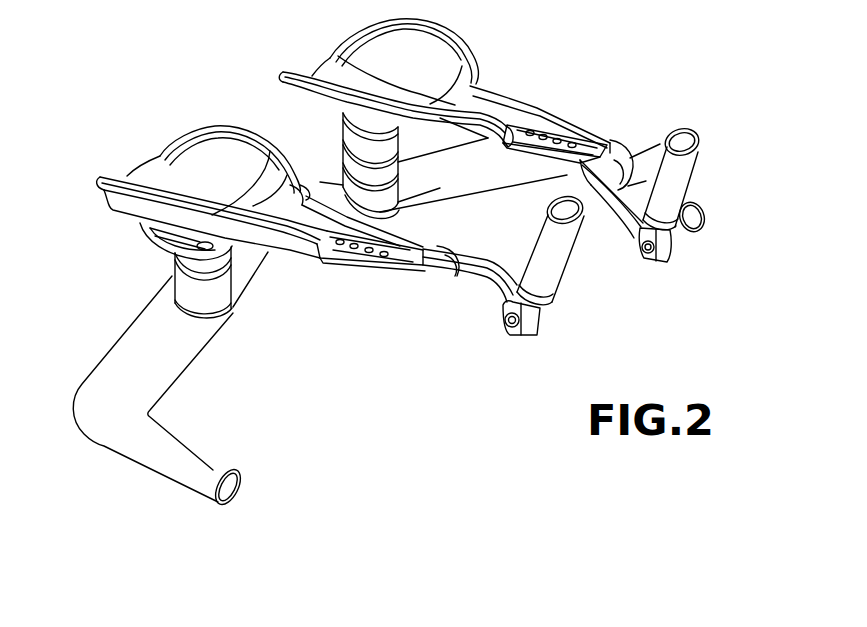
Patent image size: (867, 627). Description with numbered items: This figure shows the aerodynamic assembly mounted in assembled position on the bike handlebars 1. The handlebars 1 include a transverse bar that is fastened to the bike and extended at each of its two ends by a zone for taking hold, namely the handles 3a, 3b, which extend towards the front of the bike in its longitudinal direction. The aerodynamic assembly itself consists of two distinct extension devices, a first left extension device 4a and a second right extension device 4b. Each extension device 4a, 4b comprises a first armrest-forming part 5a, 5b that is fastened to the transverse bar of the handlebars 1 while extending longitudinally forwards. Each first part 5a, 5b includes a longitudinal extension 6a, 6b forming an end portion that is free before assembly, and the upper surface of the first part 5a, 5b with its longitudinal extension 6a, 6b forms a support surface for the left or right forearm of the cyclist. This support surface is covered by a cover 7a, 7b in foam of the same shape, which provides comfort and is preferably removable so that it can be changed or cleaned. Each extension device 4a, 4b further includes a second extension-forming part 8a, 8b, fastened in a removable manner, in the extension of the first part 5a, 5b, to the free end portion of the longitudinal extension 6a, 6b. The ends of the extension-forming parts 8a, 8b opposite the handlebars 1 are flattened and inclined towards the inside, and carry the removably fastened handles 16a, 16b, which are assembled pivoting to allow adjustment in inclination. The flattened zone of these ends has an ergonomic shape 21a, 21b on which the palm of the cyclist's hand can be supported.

The bike handlebars 1 is at (203, 363).
The handle 3a is at (680, 207).
The handle 3b is at (160, 457).
The first left extension device 4a is at (560, 90).
The second right extension device 4b is at (437, 308).
The first armrest-forming part 5a is at (317, 90).
The first armrest-forming part 5b is at (120, 197).
The longitudinal extension 6a is at (489, 138).
The longitudinal extension 6b is at (277, 238).
The cover 7a is at (345, 64).
The cover 7b is at (168, 165).
The second extension-forming part 8a is at (560, 118).
The second extension-forming part 8b is at (380, 274).
The handle 16a is at (694, 140).
The handle 16b is at (560, 258).
The ergonomic shape 21a is at (618, 174).
The ergonomic shape 21b is at (453, 268).